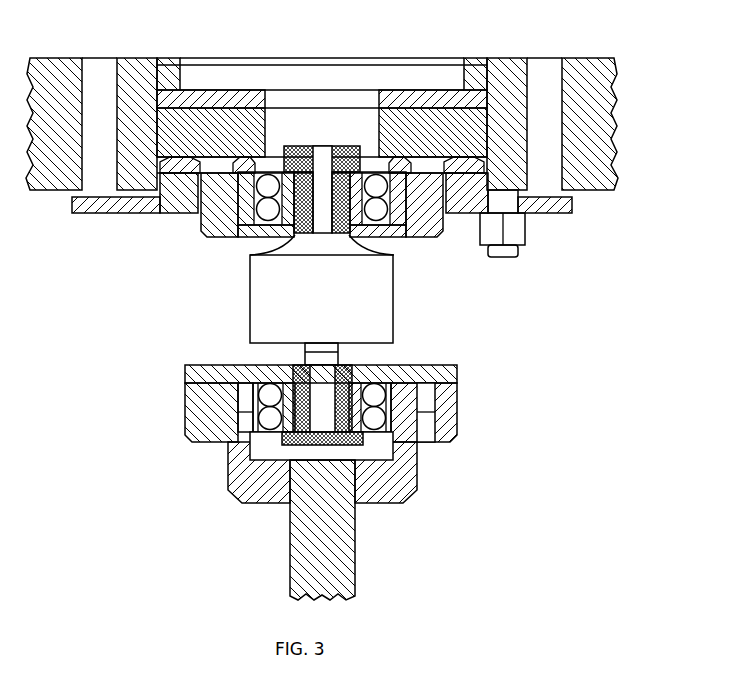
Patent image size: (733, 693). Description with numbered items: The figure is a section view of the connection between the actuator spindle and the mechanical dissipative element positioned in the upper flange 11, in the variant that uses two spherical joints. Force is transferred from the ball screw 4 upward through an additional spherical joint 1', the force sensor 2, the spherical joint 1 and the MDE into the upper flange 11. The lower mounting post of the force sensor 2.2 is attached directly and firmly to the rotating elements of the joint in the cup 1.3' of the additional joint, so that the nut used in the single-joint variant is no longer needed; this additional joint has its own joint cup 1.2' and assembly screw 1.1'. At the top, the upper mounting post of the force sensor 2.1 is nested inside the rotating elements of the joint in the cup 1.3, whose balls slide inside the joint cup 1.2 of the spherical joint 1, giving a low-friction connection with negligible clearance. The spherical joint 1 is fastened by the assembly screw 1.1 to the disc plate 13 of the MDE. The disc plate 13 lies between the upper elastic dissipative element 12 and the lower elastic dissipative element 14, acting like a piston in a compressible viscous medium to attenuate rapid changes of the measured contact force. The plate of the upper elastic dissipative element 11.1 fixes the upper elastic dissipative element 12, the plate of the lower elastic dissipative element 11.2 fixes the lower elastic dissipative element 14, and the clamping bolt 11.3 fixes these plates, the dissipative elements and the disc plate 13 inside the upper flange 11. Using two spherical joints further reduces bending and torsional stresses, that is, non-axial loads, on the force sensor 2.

The upper flange 11 is at (146, 68).
The plate of the upper elastic dissipative element 11.1 is at (252, 99).
The plate of the lower elastic dissipative element 11.2 is at (89, 204).
The clamping bolt 11.3 is at (512, 230).
The upper elastic dissipative element 12 is at (405, 128).
The disc plate 13 is at (450, 165).
The lower elastic dissipative element 14 is at (172, 187).
The spherical joint 1 is at (350, 240).
The assembly screw 1.1 is at (189, 221).
The joint cup 1.2 is at (283, 233).
The rotating elements of the joint in the cup 1.3 is at (362, 180).
The force sensor 2 is at (259, 310).
The upper mounting post of the force sensor 2.1 is at (348, 153).
The lower mounting post of the force sensor 2.2 is at (323, 373).
The spherical joint 1' is at (325, 458).
The assembly screw 1.1' is at (343, 361).
The joint cup 1.2' is at (270, 434).
The rotating elements of the joint in the cup 1.3' is at (335, 423).
The ball screw 4 is at (336, 523).